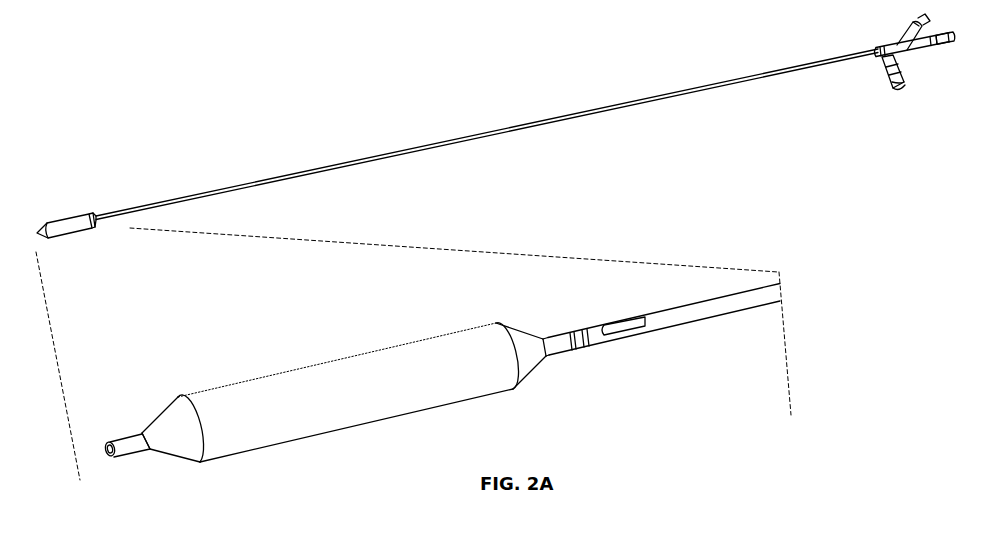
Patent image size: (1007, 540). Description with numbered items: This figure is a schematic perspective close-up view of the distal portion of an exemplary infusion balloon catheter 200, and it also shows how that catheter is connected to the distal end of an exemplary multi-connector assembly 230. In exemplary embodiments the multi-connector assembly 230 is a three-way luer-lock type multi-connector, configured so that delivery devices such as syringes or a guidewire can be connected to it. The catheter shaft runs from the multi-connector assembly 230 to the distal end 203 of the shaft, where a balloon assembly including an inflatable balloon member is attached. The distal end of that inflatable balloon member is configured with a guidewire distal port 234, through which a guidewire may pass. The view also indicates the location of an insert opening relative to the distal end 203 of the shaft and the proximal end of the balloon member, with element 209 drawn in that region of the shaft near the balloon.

The infusion balloon catheter 200 is at (205, 95).
The distal end of shaft 203 is at (568, 362).
The inner lumen tube 209 is at (612, 316).
The multi-connector assembly 230 is at (886, 104).
The guidewire distal port 234 is at (96, 459).